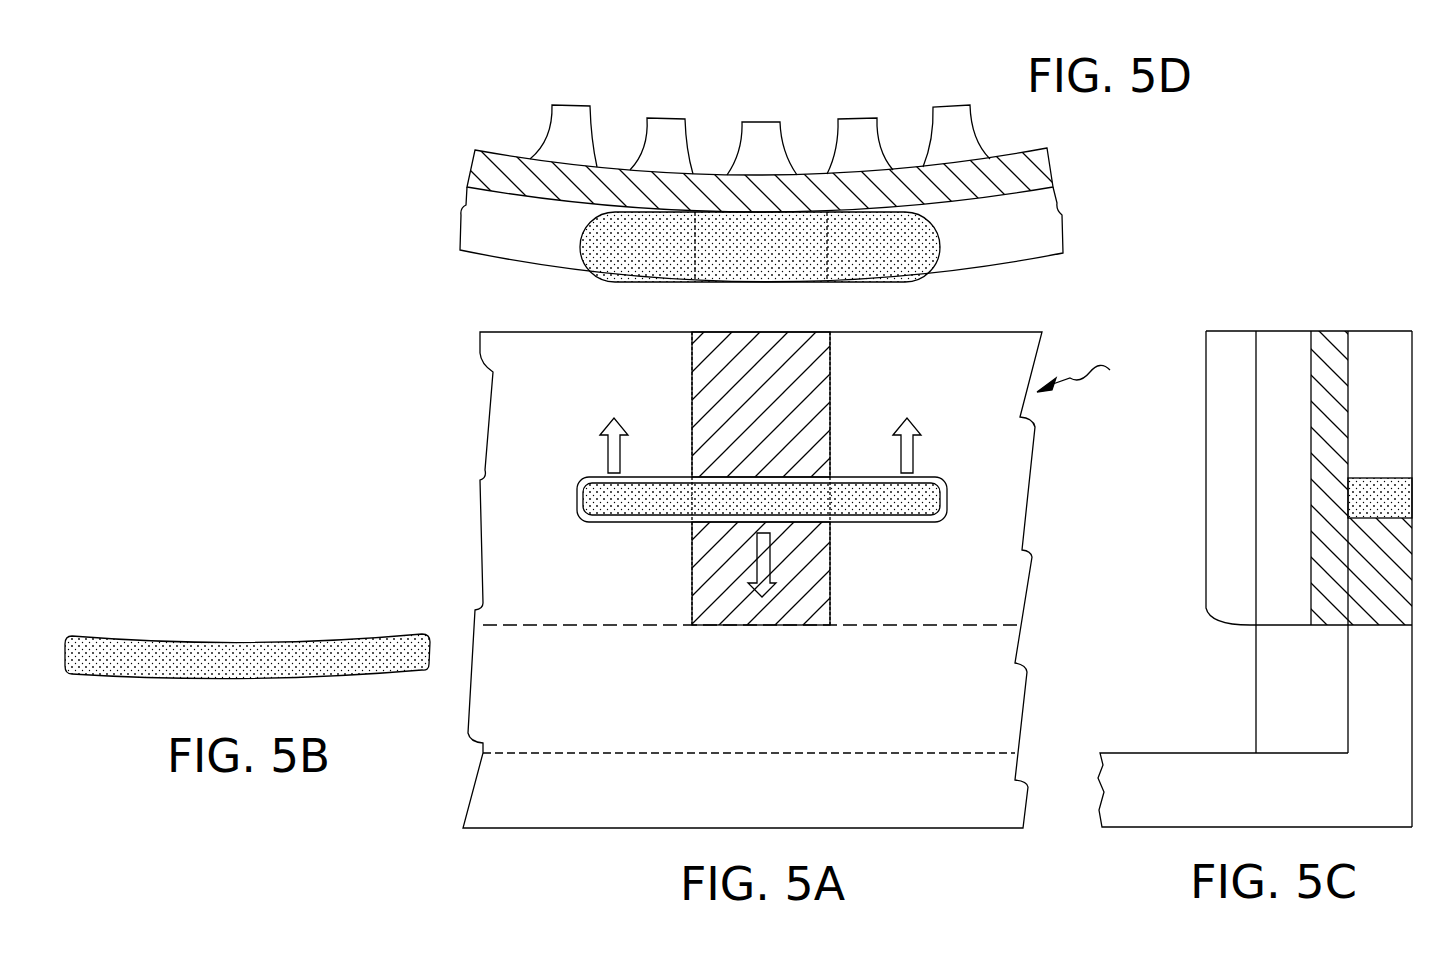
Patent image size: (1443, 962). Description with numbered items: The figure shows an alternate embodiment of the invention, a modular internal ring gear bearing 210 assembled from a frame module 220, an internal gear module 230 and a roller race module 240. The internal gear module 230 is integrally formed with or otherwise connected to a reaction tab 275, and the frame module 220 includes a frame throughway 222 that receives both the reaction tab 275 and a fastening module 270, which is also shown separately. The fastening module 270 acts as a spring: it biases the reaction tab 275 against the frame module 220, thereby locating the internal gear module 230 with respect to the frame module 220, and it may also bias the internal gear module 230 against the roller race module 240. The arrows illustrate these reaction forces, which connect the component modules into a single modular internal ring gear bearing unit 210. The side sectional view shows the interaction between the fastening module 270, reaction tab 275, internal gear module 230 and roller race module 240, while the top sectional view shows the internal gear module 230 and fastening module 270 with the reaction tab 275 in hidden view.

In FIG. 5A, the modular internal ring gear bearing 210 is at (1096, 371).
In FIG. 5A, the frame module 220 is at (483, 352).
In FIG. 5A, the frame throughway 222 is at (947, 502).
In FIG. 5C, the frame throughway 222 is at (1380, 365).
In FIG. 5D, the internal gear module 230 is at (473, 171).
In FIG. 5C, the internal gear module 230 is at (1206, 478).
In FIG. 5C, the roller race module 240 is at (1256, 695).
In FIG. 5A, the fastening module 270 is at (577, 500).
In FIG. 5B, the fastening module 270 is at (245, 652).
In FIG. 5D, the reaction tab 275 is at (807, 233).
In FIG. 5A, the reaction tab 275 is at (692, 582).
In FIG. 5C, the reaction tab 275 is at (1367, 578).